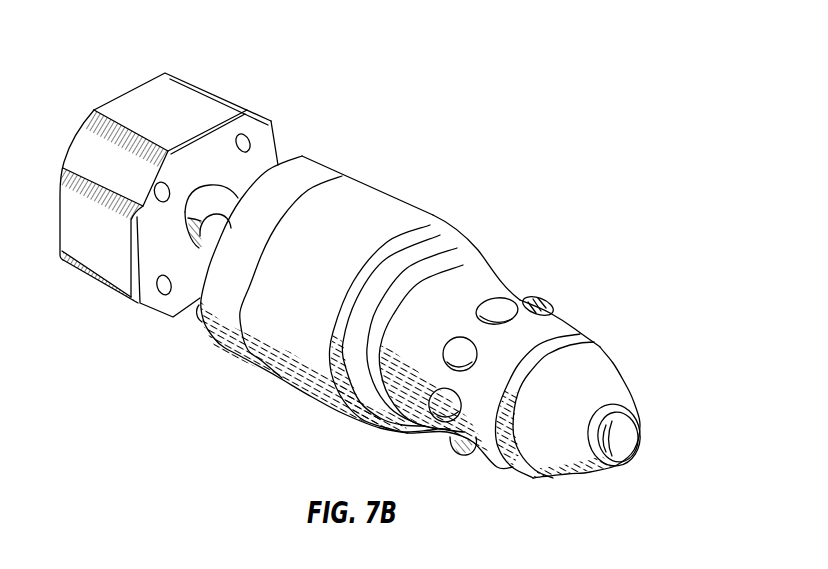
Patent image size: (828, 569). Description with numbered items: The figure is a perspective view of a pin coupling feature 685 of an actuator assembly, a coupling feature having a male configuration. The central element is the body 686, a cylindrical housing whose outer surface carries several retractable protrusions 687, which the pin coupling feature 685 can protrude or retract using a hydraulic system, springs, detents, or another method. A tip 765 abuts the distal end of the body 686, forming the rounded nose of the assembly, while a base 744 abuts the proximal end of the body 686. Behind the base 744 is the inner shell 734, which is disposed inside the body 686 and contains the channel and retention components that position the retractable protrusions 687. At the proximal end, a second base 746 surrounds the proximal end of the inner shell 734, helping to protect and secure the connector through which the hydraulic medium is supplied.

The pin coupling feature 685 is at (600, 70).
The base 746 is at (150, 98).
The inner shell 734 is at (218, 182).
The base 744 is at (323, 163).
The body 686 is at (390, 203).
The retractable protrusions 687 is at (536, 298).
The tip 765 is at (610, 375).